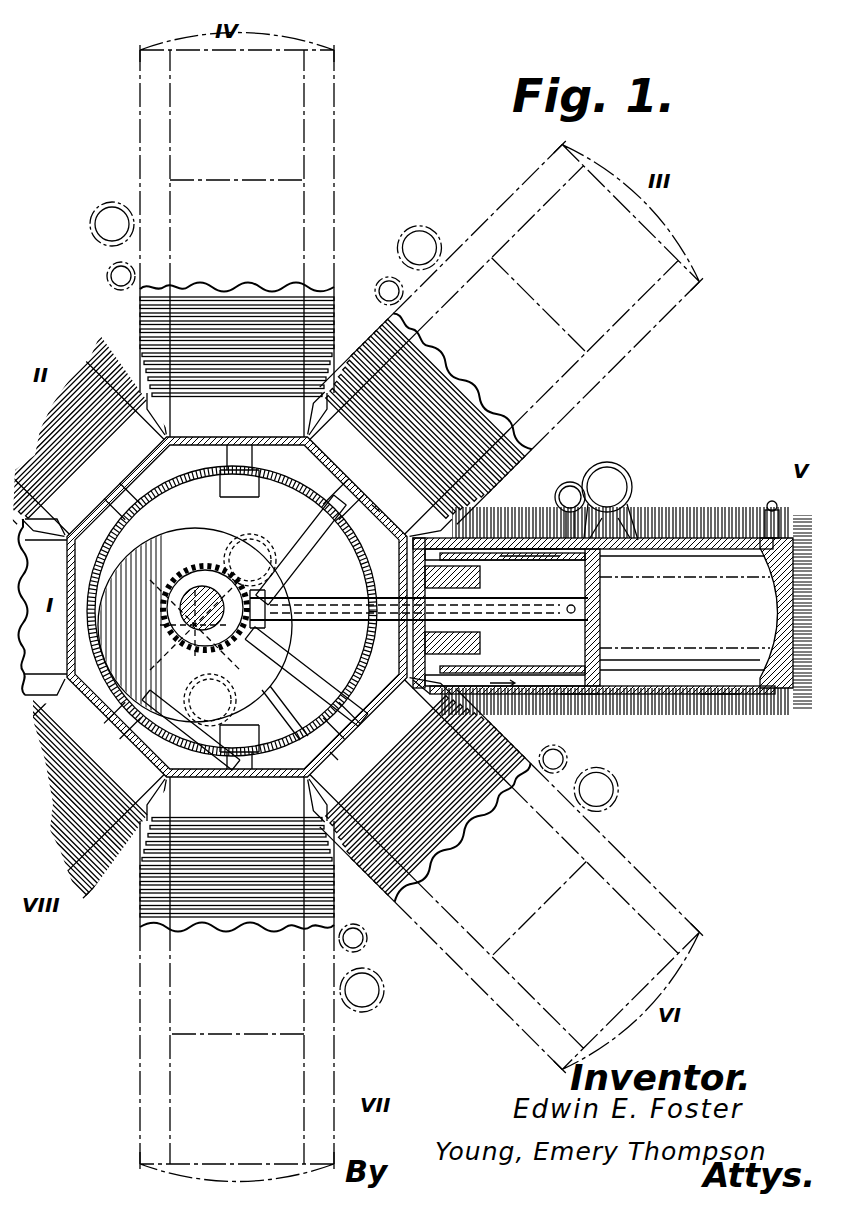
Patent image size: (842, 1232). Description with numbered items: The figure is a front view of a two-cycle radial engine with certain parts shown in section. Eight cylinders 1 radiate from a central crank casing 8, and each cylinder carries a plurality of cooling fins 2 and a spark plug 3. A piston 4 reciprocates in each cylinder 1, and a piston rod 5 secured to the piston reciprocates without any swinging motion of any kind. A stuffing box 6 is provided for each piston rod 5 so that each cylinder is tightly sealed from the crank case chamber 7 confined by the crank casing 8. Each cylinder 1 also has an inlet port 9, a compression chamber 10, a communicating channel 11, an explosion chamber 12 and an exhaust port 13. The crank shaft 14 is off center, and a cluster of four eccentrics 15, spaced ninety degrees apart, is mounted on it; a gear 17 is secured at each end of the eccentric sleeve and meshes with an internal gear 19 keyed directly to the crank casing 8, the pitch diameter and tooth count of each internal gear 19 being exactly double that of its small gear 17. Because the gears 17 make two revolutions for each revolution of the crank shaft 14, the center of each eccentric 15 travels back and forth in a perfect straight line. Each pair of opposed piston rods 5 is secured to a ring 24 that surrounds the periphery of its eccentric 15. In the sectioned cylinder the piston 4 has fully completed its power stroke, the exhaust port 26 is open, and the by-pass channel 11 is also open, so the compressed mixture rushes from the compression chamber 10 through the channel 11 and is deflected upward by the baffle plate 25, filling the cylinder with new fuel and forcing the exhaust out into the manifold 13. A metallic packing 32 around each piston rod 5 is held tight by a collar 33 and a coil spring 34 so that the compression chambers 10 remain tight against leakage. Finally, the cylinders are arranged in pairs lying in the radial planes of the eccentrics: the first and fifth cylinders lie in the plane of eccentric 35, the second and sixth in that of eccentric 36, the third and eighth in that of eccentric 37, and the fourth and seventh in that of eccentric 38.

The cylinder 1 is at (252, 185).
The cooling fins 2 is at (675, 535).
The spark plug 3 is at (772, 502).
The piston 4 is at (600, 588).
The piston rod 5 is at (508, 598).
The stuffing box 6 is at (485, 650).
The crank case chamber 7 is at (372, 505).
The crank casing 8 is at (330, 752).
The inlet port 9 is at (573, 490).
The compression chamber 10 is at (508, 552).
The communicating channel 11 is at (582, 692).
The explosion chamber 12 is at (700, 694).
The exhaust port 13 is at (622, 470).
The crank shaft 14 is at (225, 745).
The eccentric 15 is at (298, 548).
The gear 17 is at (285, 730).
The internal gear 19 is at (350, 668).
The ring 24 is at (255, 478).
The baffle plate 25 is at (630, 655).
The exhaust port 26 is at (640, 500).
The metallic packing 32 is at (452, 573).
The collar 33 is at (452, 646).
The coil spring 34 is at (419, 609).
The eccentric 35 is at (92, 600).
The eccentric 36 is at (230, 540).
The eccentric 37 is at (195, 716).
The eccentric 38 is at (300, 634).